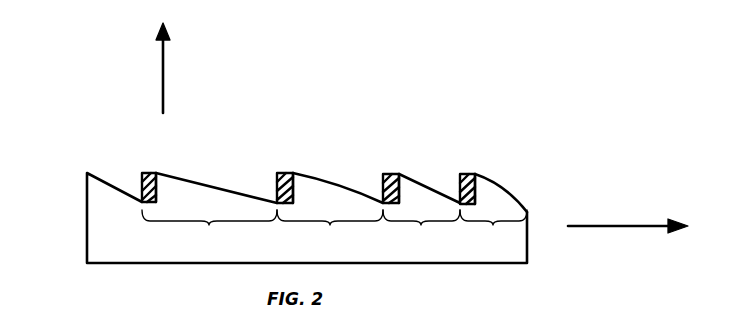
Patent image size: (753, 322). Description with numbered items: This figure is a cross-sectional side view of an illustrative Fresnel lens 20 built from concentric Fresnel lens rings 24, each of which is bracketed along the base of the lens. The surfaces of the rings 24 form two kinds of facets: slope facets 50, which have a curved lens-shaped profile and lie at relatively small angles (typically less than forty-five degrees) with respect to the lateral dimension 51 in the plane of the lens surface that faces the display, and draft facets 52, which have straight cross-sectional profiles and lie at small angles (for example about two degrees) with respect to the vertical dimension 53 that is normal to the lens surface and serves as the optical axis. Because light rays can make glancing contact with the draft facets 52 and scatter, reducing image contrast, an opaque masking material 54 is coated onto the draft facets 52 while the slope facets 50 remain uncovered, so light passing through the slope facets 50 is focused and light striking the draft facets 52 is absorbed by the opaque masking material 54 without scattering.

The Fresnel lens 20 is at (110, 218).
The concentric Fresnel lens ring 24 is at (334, 231).
The slope facet 50 is at (227, 188).
The lateral dimension 51 is at (616, 226).
The draft facet 52 is at (157, 190).
The vertical dimension 53 is at (164, 63).
The opaque masking material 54 is at (142, 174).